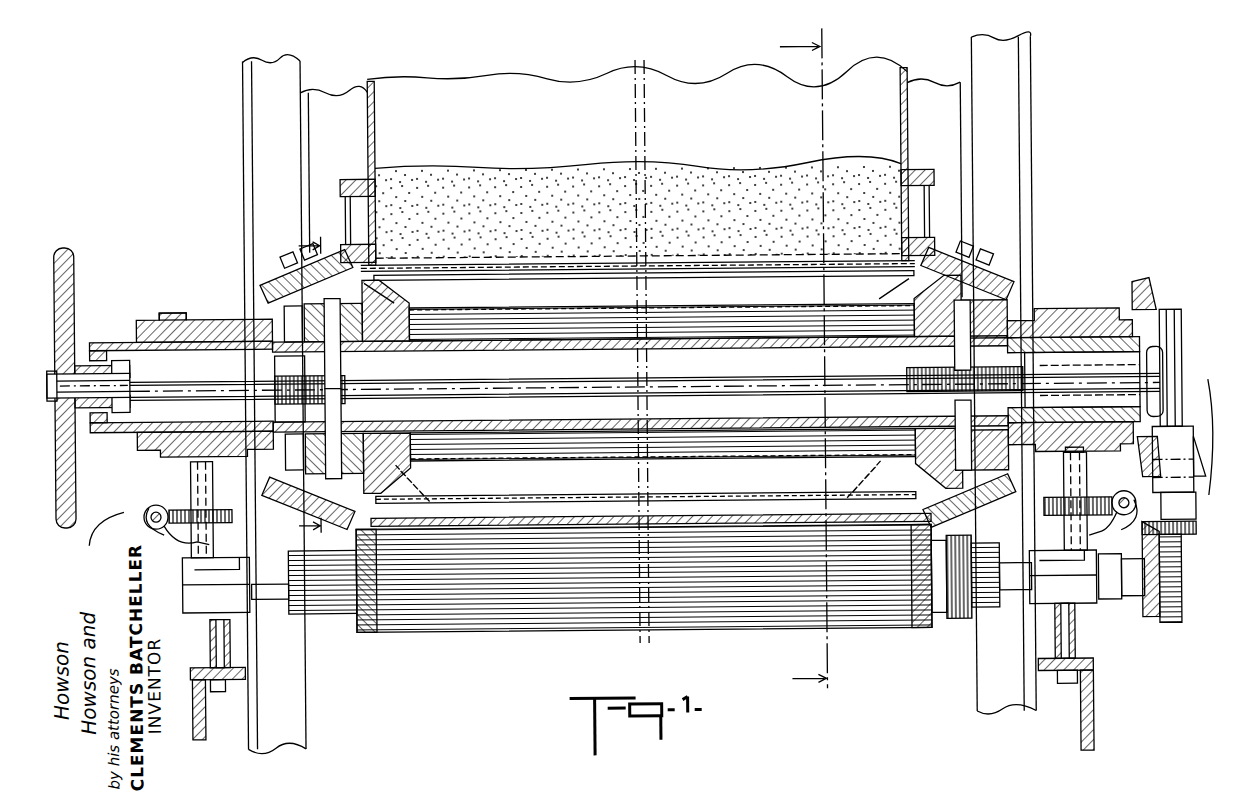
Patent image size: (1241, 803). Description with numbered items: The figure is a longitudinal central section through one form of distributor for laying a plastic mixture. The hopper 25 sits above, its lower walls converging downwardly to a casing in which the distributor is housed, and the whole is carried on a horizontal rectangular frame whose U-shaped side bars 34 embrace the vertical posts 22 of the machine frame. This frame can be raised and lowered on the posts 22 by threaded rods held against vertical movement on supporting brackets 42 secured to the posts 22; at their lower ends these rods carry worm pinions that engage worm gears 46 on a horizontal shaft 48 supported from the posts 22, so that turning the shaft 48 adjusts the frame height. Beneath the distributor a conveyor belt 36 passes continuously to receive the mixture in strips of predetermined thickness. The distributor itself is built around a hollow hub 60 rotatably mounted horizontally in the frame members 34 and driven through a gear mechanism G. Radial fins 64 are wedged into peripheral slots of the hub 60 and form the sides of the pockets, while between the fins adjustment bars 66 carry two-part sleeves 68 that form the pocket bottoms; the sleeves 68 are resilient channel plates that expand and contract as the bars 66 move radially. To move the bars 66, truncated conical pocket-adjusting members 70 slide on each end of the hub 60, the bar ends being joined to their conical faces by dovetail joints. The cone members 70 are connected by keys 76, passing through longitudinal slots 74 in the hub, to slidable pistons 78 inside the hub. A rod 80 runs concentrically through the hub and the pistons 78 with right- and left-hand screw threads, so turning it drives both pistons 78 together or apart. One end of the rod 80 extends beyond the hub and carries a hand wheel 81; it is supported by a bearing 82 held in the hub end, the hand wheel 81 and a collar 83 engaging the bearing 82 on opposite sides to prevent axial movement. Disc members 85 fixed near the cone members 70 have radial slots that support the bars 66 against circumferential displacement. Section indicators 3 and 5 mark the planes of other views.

The vertical posts 22 is at (266, 140).
The hopper 25 is at (552, 88).
The two-part sleeves 68 is at (554, 273).
The section line 3- 3 is at (807, 363).
The section line 5- 5 is at (312, 382).
The slidable pistons 78 is at (930, 397).
The rod 80 is at (506, 381).
The fins 64 is at (460, 323).
The pocket-adjusting members 70 is at (300, 292).
The adjustment bars 66 is at (332, 273).
The keys 76 is at (290, 321).
The longitudinally extending slots 74 is at (270, 313).
The disc members 85 is at (892, 302).
The hollow hub 60 is at (119, 341).
The side bars 34 is at (173, 313).
The hand wheel 81 is at (77, 262).
The bearing 82 is at (104, 420).
The collar 83 is at (130, 434).
The gear mechanism G is at (1181, 398).
The conveyor belt 36 is at (420, 549).
The worm gears 46 is at (150, 509).
The supporting brackets 42 is at (150, 523).
The horizontal shaft 48 is at (106, 539).